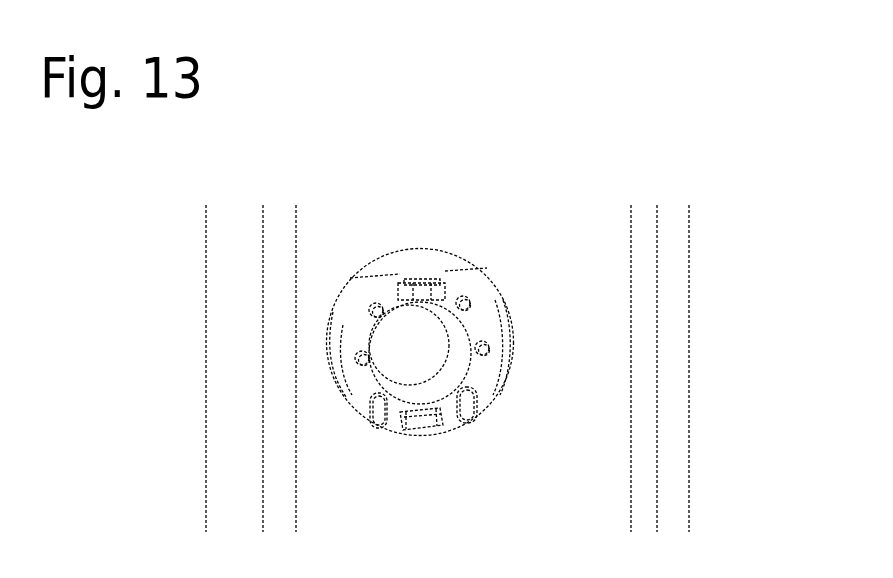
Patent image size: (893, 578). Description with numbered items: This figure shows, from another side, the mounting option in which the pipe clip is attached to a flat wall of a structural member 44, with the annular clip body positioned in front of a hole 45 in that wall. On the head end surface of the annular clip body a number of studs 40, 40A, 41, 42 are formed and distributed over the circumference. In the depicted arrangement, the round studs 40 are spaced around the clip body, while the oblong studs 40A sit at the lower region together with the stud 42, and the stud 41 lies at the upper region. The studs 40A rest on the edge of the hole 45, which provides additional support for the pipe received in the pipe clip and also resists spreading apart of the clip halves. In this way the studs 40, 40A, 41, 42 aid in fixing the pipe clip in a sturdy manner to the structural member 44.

The round studs 40 is at (363, 353).
The oblong studs 40A is at (378, 424).
The stud 41 is at (440, 307).
The stud 42 is at (418, 413).
The structural member 44 is at (598, 257).
The hole 45 is at (497, 375).